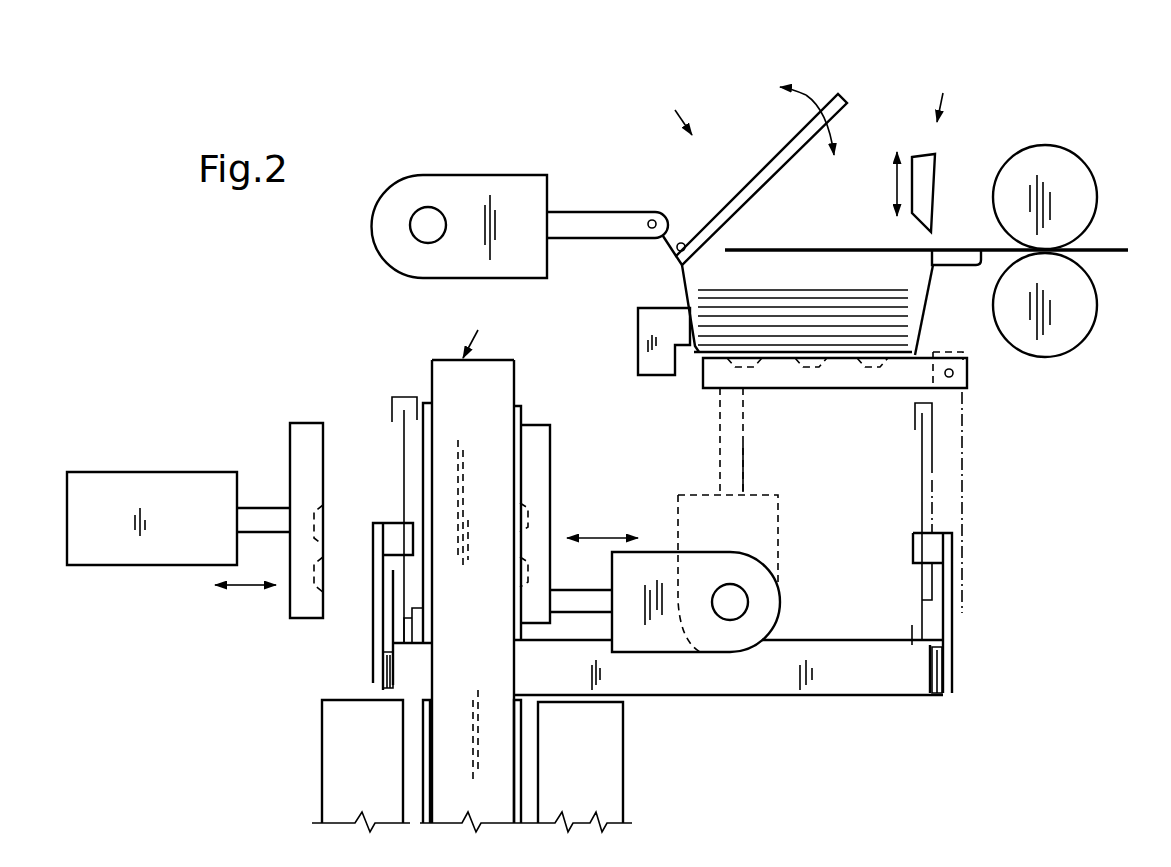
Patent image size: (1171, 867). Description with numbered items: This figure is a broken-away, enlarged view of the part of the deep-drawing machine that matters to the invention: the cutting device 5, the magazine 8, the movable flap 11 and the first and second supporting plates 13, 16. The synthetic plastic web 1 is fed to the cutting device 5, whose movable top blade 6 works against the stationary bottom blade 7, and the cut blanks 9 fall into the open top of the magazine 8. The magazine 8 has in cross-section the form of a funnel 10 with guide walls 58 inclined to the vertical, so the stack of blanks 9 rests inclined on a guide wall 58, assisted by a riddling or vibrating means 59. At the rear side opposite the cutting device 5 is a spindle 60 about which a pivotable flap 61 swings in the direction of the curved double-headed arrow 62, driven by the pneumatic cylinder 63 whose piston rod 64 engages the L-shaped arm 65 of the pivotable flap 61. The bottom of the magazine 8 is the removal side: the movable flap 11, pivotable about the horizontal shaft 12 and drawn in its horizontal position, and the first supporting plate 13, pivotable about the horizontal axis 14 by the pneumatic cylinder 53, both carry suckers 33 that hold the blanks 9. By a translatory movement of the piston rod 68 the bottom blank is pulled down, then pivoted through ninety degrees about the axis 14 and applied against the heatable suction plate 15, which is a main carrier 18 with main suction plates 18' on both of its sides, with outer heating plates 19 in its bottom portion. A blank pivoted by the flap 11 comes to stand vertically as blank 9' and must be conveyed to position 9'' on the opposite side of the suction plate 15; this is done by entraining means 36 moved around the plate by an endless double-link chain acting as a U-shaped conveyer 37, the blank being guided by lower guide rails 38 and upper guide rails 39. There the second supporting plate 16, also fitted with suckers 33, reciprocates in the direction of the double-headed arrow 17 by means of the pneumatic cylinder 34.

The synthetic plastic web 1 is at (1113, 249).
The cutting device 5 is at (945, 91).
The movable top blade 6 is at (918, 170).
The stationary bottom blade 7 is at (950, 263).
The magazine 8 is at (675, 107).
The blanks 9 is at (803, 280).
The vertically disposed blank 9' is at (905, 526).
The blank position 9'' is at (382, 526).
The funnel 10 is at (682, 288).
The movable flap 11 is at (825, 386).
The horizontal shaft 12 is at (955, 374).
The first supporting plate 13 is at (535, 470).
The horizontal axis 14 is at (735, 590).
The heatable suction plate 15 is at (473, 561).
The second supporting plate 16 is at (300, 445).
The double-headed arrow 17 is at (248, 588).
The main carrier 18 is at (491, 356).
The main suction plates 18' is at (482, 576).
The outer heating plates 19 is at (342, 755).
The suckers 33 is at (728, 360).
The pneumatic cylinder 34 is at (90, 553).
The entraining means 36 is at (382, 523).
The U-shaped conveyer 37 is at (375, 670).
The lower guide rails 38 is at (910, 637).
The upper guide rails 39 is at (390, 399).
The pneumatic cylinder 53 is at (647, 565).
The guide walls 58 is at (920, 341).
The riddling or vibrating means 59 is at (655, 330).
The spindle 60 is at (683, 244).
The pivotable flap 61 is at (773, 157).
The curved double-headed arrow 62 is at (810, 108).
The pneumatic cylinder 63 is at (466, 190).
The piston rod 64 is at (601, 220).
The L-shaped arm 65 is at (672, 237).
The piston rod 68 is at (738, 453).